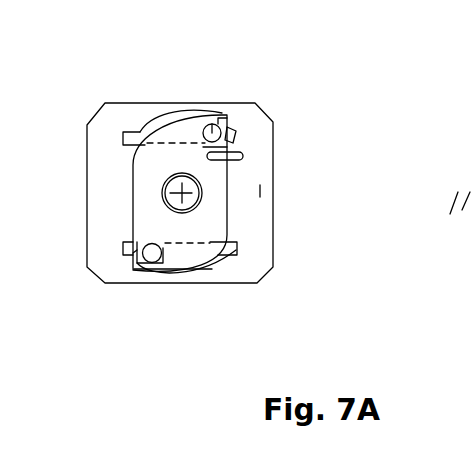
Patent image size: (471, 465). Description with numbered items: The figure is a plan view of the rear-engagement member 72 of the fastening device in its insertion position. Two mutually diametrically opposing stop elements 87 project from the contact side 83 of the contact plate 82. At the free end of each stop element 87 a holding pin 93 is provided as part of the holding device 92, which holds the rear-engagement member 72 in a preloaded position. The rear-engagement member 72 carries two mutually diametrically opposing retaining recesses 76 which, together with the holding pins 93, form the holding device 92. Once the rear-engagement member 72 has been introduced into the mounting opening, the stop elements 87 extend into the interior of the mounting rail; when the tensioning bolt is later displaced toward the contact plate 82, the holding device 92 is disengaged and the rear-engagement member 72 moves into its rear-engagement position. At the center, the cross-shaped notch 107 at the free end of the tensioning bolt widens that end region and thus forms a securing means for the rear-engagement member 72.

The rear-engagement member 72 is at (213, 215).
The retaining recess 76 is at (233, 146).
The contact plate 82 is at (207, 108).
The contact side 83 is at (260, 191).
The stop element 87 is at (155, 116).
The holding device 92 is at (232, 140).
The holding pin 93 is at (240, 122).
The cross-shaped notch 107 is at (162, 193).